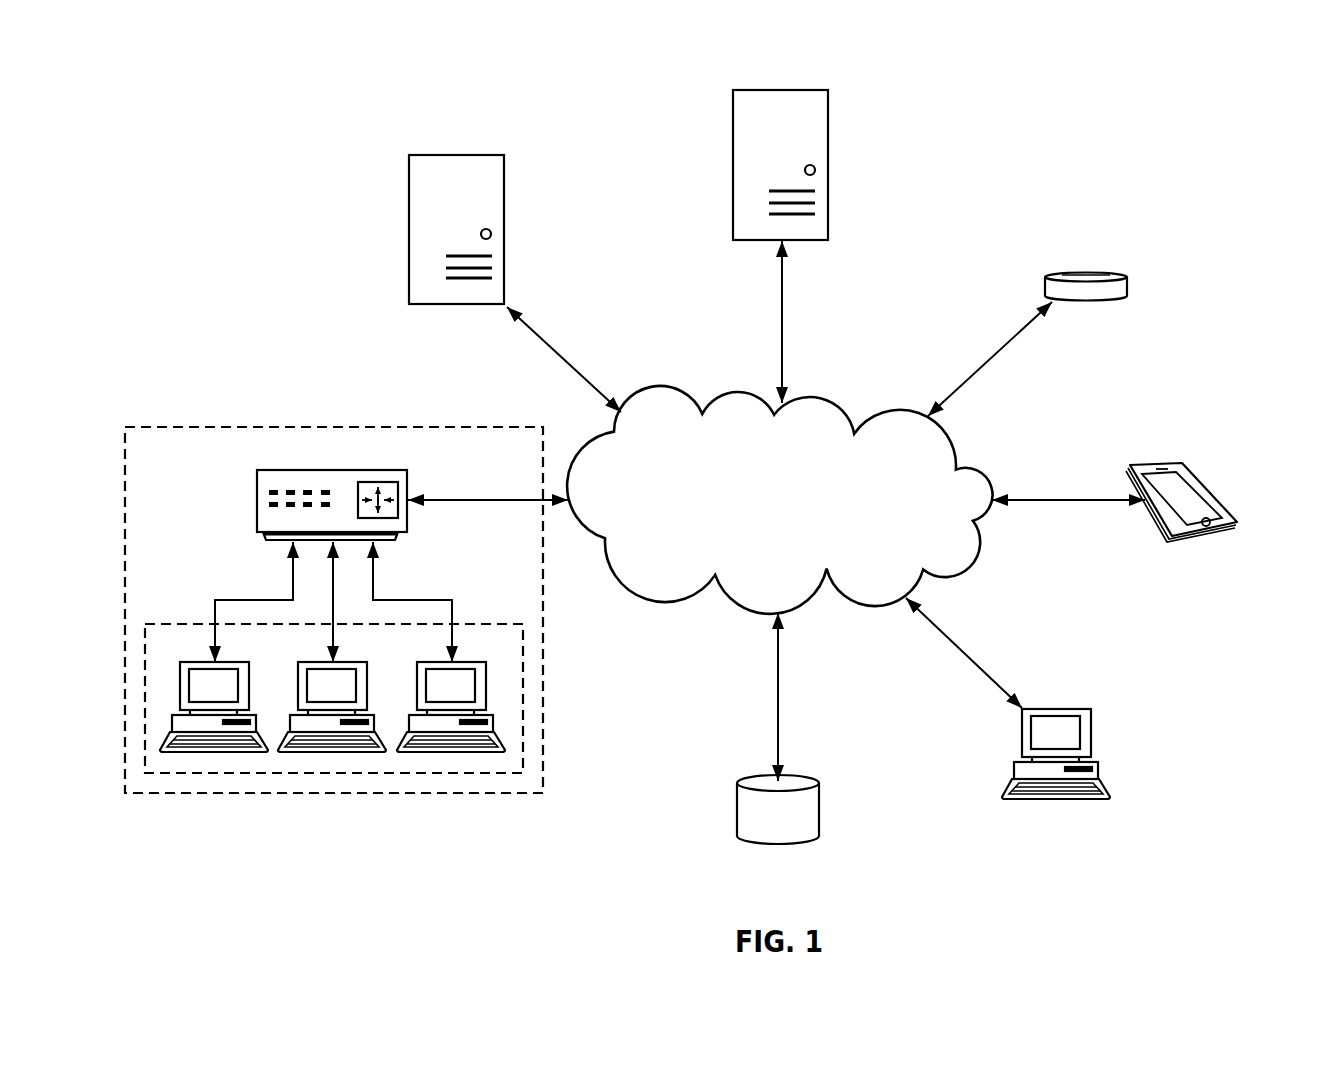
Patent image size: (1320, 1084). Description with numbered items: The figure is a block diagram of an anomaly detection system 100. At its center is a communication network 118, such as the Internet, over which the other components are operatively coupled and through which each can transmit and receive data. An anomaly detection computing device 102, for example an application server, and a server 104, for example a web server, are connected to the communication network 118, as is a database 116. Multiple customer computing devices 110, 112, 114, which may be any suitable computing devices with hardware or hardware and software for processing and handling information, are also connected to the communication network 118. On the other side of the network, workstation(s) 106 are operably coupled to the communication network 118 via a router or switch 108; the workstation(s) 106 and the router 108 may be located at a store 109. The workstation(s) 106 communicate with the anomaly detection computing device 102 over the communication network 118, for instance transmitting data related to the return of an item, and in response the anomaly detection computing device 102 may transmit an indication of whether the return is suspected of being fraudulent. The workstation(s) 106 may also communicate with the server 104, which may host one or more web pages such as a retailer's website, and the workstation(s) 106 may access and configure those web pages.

The anomaly detection system 100 is at (1170, 82).
The anomaly detection computing device 102 is at (805, 90).
The server 104 is at (432, 153).
The workstation(s) 106 is at (197, 622).
The router 108 is at (283, 470).
The store 109 is at (197, 425).
The customer computing device 110 is at (1098, 272).
The customer computing device 112 is at (1207, 488).
The customer computing device 114 is at (1082, 707).
The database 116 is at (808, 775).
The communication network 118 is at (823, 388).